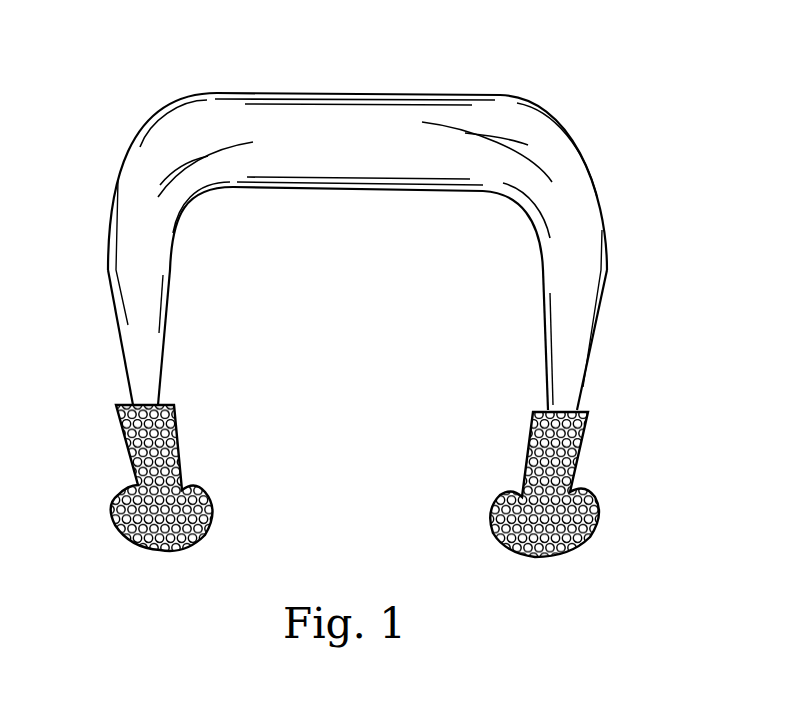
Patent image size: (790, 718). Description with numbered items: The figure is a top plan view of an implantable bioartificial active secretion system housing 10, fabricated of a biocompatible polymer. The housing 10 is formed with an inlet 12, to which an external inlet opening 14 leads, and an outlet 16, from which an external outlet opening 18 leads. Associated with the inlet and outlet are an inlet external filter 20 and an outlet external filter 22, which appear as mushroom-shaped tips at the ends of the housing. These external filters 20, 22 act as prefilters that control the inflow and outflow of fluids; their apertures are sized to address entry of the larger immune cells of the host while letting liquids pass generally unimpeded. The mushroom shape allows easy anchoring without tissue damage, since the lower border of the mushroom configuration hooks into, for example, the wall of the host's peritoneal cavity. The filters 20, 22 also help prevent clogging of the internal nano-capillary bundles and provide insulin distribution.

The implantable bioartificial active secretion system housing 10 is at (369, 298).
The inlet 12 is at (138, 362).
The external inlet opening 14 is at (137, 482).
The outlet 16 is at (575, 300).
The external outlet opening 18 is at (634, 118).
The inlet external filter 20 is at (165, 488).
The outlet external filter 22 is at (494, 533).